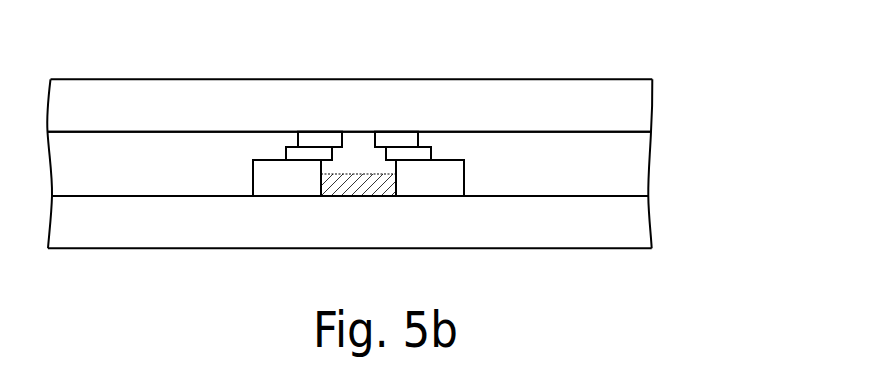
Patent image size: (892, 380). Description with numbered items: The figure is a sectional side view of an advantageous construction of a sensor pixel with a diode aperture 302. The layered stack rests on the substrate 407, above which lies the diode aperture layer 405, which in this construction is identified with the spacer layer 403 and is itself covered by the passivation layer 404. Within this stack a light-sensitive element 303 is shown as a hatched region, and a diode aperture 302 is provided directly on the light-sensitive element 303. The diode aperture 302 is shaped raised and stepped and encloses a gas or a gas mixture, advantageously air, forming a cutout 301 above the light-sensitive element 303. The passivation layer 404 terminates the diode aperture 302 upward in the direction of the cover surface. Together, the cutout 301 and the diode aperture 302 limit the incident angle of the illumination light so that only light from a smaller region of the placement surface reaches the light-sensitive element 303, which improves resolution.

The cutout 301 is at (357, 159).
The diode aperture 302 is at (302, 153).
The light-sensitive element 303 is at (366, 176).
The spacer layer 403 is at (436, 160).
The passivation layer 404 is at (637, 103).
The diode aperture layer 405 is at (637, 163).
The substrate 407 is at (637, 225).